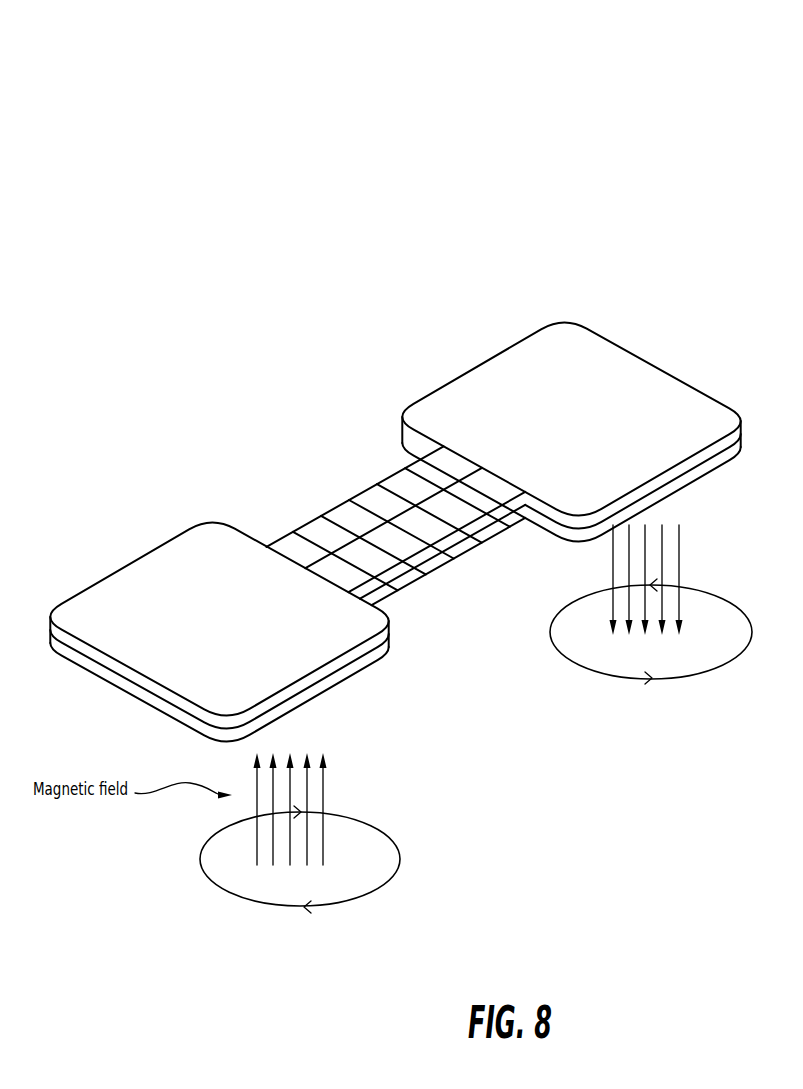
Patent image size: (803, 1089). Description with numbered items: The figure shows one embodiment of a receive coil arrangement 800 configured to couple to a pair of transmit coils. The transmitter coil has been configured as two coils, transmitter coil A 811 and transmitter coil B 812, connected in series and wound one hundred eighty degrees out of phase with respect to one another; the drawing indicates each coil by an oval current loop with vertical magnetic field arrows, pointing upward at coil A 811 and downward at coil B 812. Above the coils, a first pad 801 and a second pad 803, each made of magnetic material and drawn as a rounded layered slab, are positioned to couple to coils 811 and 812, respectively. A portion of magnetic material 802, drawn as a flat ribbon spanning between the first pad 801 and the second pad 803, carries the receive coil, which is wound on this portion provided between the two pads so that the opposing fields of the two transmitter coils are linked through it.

The wireless power transmitter assembly 800 is at (428, 217).
The first pad 801 is at (142, 607).
The flexible cable 802 is at (307, 495).
The second pad 803 is at (588, 378).
The transmitter coil A 811 is at (308, 973).
The transmitter coil B 812 is at (658, 747).